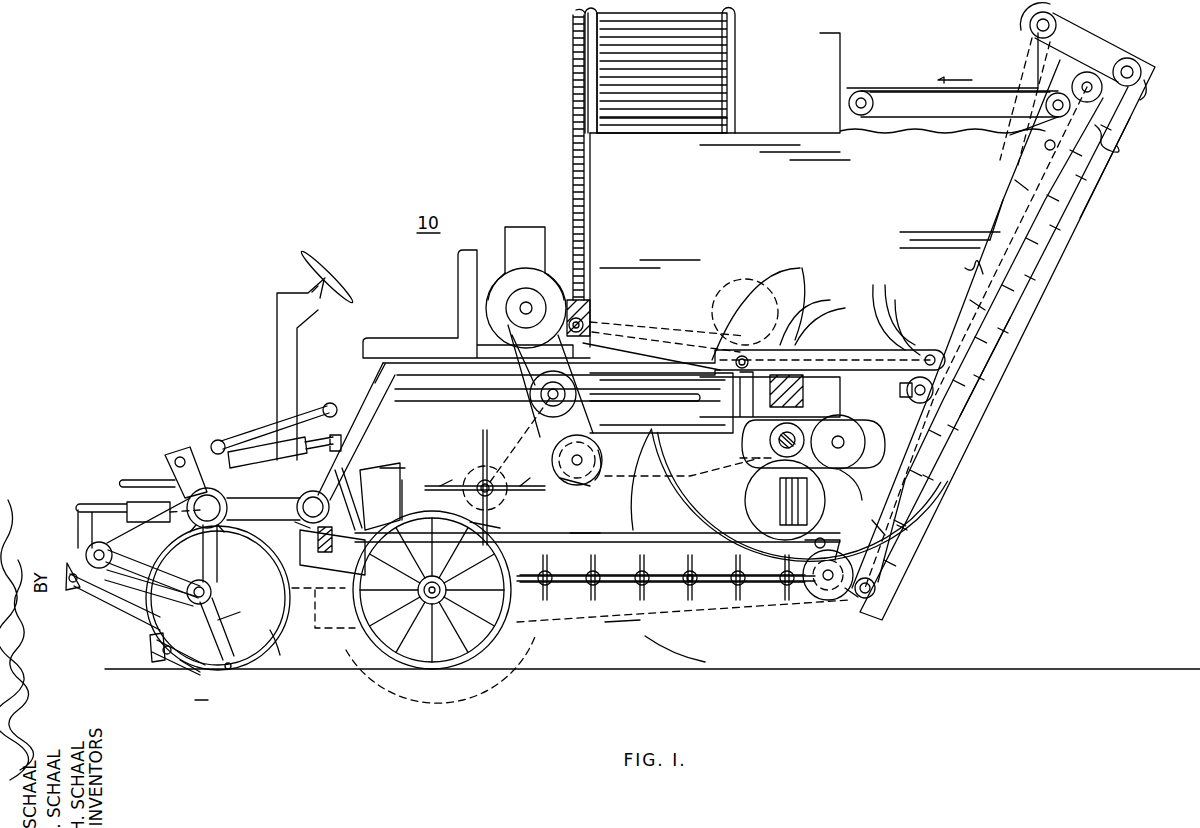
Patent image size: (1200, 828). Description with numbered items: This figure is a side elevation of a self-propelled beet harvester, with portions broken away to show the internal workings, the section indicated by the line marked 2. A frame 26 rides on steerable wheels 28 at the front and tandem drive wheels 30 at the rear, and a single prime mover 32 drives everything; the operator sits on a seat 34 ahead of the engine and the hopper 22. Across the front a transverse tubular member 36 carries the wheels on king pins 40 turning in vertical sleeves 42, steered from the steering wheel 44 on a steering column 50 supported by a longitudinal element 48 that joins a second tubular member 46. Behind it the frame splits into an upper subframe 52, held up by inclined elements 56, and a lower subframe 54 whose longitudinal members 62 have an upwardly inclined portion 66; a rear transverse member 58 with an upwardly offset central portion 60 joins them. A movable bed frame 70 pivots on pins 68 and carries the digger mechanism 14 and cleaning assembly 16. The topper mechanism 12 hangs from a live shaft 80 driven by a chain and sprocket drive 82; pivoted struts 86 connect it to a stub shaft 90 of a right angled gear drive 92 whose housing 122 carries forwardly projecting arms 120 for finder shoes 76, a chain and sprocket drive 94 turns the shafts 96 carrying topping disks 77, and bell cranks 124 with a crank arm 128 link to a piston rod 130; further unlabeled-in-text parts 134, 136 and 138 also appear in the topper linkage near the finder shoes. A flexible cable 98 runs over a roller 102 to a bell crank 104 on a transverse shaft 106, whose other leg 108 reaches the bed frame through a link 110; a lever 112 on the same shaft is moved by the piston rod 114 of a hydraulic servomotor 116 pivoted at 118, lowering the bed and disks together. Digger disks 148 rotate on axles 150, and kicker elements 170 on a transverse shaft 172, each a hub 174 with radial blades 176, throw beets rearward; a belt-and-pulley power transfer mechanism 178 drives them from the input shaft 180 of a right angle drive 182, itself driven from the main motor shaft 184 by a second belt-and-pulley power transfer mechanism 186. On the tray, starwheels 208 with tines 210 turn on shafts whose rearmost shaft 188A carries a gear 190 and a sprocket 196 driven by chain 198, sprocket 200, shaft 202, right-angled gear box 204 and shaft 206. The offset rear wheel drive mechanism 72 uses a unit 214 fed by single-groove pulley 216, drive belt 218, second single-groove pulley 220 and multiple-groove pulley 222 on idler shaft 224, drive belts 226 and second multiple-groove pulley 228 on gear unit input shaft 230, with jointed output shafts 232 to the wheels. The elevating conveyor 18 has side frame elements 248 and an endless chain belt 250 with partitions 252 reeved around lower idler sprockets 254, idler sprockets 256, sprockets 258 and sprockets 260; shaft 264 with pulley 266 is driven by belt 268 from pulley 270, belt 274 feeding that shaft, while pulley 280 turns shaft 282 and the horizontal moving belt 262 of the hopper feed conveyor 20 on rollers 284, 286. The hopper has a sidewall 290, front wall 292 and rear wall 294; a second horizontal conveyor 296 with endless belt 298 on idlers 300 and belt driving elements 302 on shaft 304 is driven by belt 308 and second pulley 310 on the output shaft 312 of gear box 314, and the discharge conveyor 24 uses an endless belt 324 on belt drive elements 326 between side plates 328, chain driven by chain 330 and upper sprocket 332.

The topper mechanism 12 is at (123, 638).
The digger mechanism 14 is at (340, 643).
The cleaning assembly 16 is at (618, 637).
The elevating conveyor 18 is at (1028, 339).
The hopper feed conveyor 20 is at (933, 71).
The hopper 22 is at (776, 131).
The discharge conveyor 24 is at (756, 77).
The frame 26 is at (358, 378).
The steerable wheels 28 is at (285, 662).
The tandem drive wheels 30 is at (790, 664).
The prime mover 32 is at (527, 235).
The seat 34 is at (400, 335).
The transverse tubular member 36 is at (228, 496).
The king pins 40 is at (218, 574).
The vertical sleeves 42 is at (218, 560).
The steering wheel 44 is at (335, 268).
The second tubular member 46 is at (330, 589).
The longitudinal element 48 is at (313, 493).
The steering column 50 is at (292, 358).
The upper subframe 52 is at (722, 316).
The lower subframe 54 is at (579, 522).
The inclined elements 56 is at (360, 427).
The rear transverse member 58 is at (785, 507).
The upwardly offset central portion 60 is at (805, 396).
The longitudinal members 62 is at (652, 537).
The upwardly inclined portion 66 is at (340, 556).
The pins 68 is at (812, 546).
The movable bed frame 70 is at (575, 622).
The rear wheel drive mechanism 72 is at (742, 454).
The finder shoes 76 is at (167, 652).
The topping disks 77 is at (228, 668).
The live shaft 80 is at (90, 602).
The chain and sprocket drive 82 is at (175, 455).
The pivoted struts 86 is at (160, 570).
The stub shaft 90 is at (182, 650).
The right angled gear drive 92 is at (214, 606).
The chain and sprocket drive 94 is at (165, 592).
The shafts 96 is at (190, 665).
The flexible cable 98 is at (302, 528).
The roller 102 is at (248, 512).
The bell crank 104 is at (322, 530).
The transverse shaft 106 is at (355, 492).
The other leg 108 is at (385, 470).
The link 110 is at (410, 490).
The lever 112 is at (345, 466).
The piston rod 114 is at (308, 412).
The hydraulic servomotor 116 is at (265, 445).
The pivotal attachment 118 is at (212, 440).
The forwardly projecting arms 120 is at (200, 705).
The housing 122 is at (228, 630).
The bell cranks 124 is at (86, 550).
The crank arm 128 is at (83, 504).
The piston rod 130 is at (123, 482).
The pivot 134 is at (65, 588).
The link 136 is at (130, 637).
The pin 138 is at (148, 662).
The digger disks 148 is at (512, 655).
The axles 150 is at (420, 575).
The kicker elements 170 is at (470, 460).
The transverse shaft 172 is at (492, 476).
The hub 174 is at (480, 520).
The radial blades 176 is at (450, 490).
The belt-and-pulley power transfer mechanism 178 is at (520, 428).
The input shaft 180 is at (560, 390).
The right angle drive 182 is at (664, 364).
The main motor shaft 184 is at (520, 300).
The second belt-and-pulley power transfer mechanism 186 is at (557, 391).
The rearmost shaft 188A is at (823, 595).
The gear 190 is at (712, 577).
The sprocket 196 is at (858, 600).
The chain 198 is at (878, 525).
The sprocket 200 is at (920, 378).
The shaft 202 is at (890, 335).
The right-angled gear box 204 is at (877, 305).
The shaft 206 is at (680, 405).
The starwheels 208 is at (612, 568).
The tines 210 is at (662, 640).
The unit 214 is at (783, 472).
The single-groove pulley 216 is at (505, 236).
The drive belt 218 is at (600, 445).
The second single-groove pulley 220 is at (572, 483).
The multiple-groove pulley 222 is at (633, 473).
The idler shaft 224 is at (560, 440).
The drive belts 226 is at (650, 462).
The second multiple-groove pulley 228 is at (855, 482).
The gear unit input shaft 230 is at (846, 440).
The jointed output shafts 232 is at (792, 430).
The side frame elements 248 is at (1060, 263).
The endless chain belt 250 is at (975, 392).
The partitions 252 is at (1050, 188).
The lower idler sprockets 254 is at (870, 580).
The idler sprockets 256 is at (1127, 60).
The sprockets 258 is at (1035, 42).
The sprockets 260 is at (1141, 75).
The horizontal moving belt 262 is at (980, 92).
The shaft 264 is at (1072, 84).
The pulley 266 is at (1066, 18).
The belt 268 is at (1118, 140).
The pulley 270 is at (1020, 185).
The belt 274 is at (988, 240).
The pulley 280 is at (1044, 148).
The shaft 282 is at (1045, 112).
The roller 284 is at (1045, 105).
The roller 286 is at (868, 92).
The sidewall 290 is at (838, 218).
The front wall 292 is at (592, 225).
The rear wall 294 is at (975, 266).
The second horizontal conveyor 296 is at (823, 312).
The endless belt 298 is at (785, 283).
The idlers 300 is at (978, 305).
The belt driving elements 302 is at (738, 350).
The shaft 304 is at (720, 294).
The belt 308 is at (700, 318).
The second pulley 310 is at (615, 322).
The output shaft 312 is at (580, 318).
The gear box 314 is at (583, 302).
The endless belt 324 is at (700, 118).
The belt drive elements 326 is at (585, 14).
The side plates 328 is at (574, 108).
The chain 330 is at (590, 75).
The upper sprocket 332 is at (572, 40).
The section line 2 is at (828, 651).